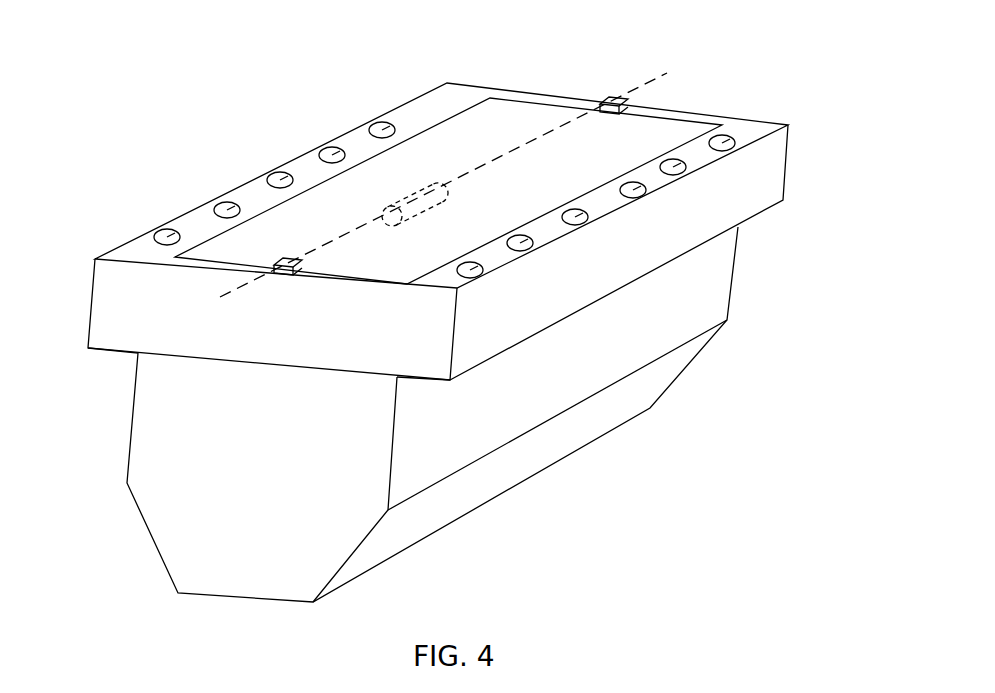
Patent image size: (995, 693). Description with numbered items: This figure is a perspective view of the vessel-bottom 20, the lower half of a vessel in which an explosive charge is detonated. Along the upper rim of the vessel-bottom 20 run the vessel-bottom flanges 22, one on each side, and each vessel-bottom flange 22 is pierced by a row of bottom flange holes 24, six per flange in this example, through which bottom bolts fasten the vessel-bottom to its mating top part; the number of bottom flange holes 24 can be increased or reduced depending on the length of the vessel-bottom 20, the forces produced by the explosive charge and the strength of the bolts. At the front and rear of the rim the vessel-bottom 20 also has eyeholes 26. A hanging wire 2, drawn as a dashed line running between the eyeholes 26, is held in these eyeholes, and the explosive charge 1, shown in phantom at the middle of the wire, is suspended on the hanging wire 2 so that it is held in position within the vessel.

The vessel-bottom 20 is at (747, 293).
The vessel-bottom flanges 22 is at (90, 303).
The bottom flange holes 24 is at (170, 235).
The eyeholes 26 is at (278, 272).
The explosive charge 1 is at (422, 218).
The hanging wire 2 is at (503, 157).